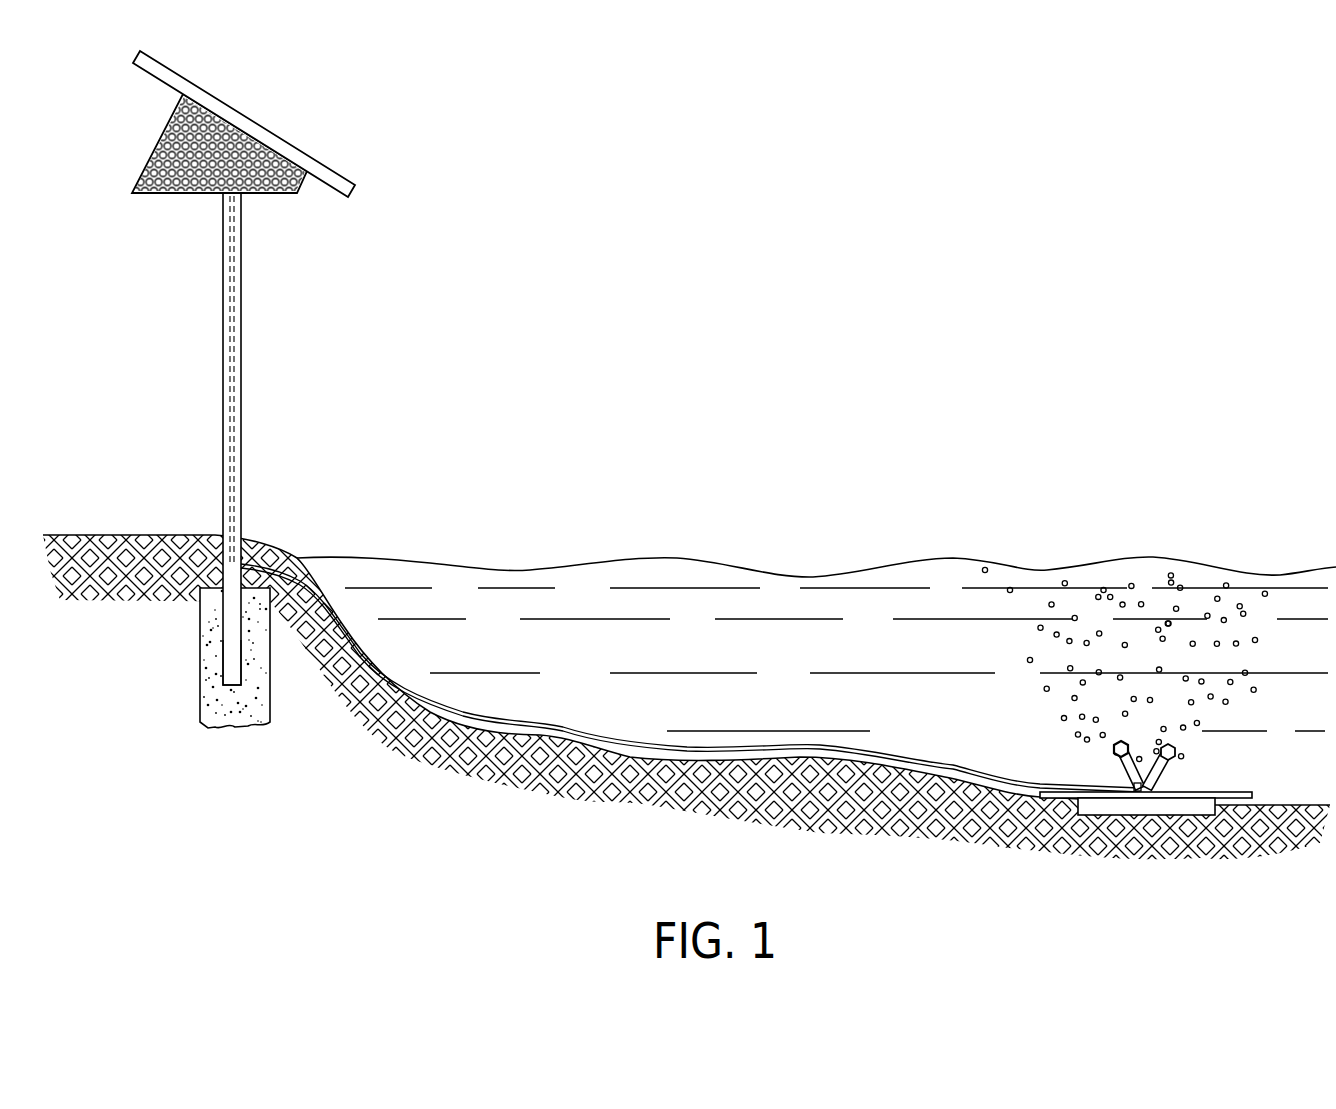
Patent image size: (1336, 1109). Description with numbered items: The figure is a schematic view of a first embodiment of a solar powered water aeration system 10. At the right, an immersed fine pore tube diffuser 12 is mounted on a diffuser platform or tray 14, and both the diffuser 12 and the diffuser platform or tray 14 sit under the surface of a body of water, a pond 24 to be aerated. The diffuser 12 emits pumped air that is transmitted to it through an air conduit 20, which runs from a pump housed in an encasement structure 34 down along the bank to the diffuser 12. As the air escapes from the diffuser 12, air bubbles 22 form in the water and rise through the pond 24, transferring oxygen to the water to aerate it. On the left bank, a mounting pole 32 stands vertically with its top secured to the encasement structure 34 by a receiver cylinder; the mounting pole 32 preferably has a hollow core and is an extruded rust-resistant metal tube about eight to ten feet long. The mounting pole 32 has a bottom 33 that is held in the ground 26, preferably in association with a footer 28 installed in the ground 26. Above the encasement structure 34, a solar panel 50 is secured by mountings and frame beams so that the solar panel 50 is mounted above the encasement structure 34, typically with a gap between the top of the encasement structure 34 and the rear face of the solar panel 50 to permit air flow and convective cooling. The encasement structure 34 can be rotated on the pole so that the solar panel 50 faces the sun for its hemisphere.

The water aeration system 10 is at (790, 297).
The fine pore tube diffuser 12 is at (1120, 770).
The diffuser platform or tray 14 is at (1167, 807).
The air conduit 20 is at (228, 365).
The air bubbles 22 is at (1223, 587).
The pond 24 is at (1122, 597).
The ground 26 is at (158, 540).
The footer 28 is at (200, 712).
The mounting pole 32 is at (238, 273).
The bottom of the mounting pole 33 is at (233, 655).
The encasement structure 34 is at (163, 135).
The solar panel 50 is at (300, 157).